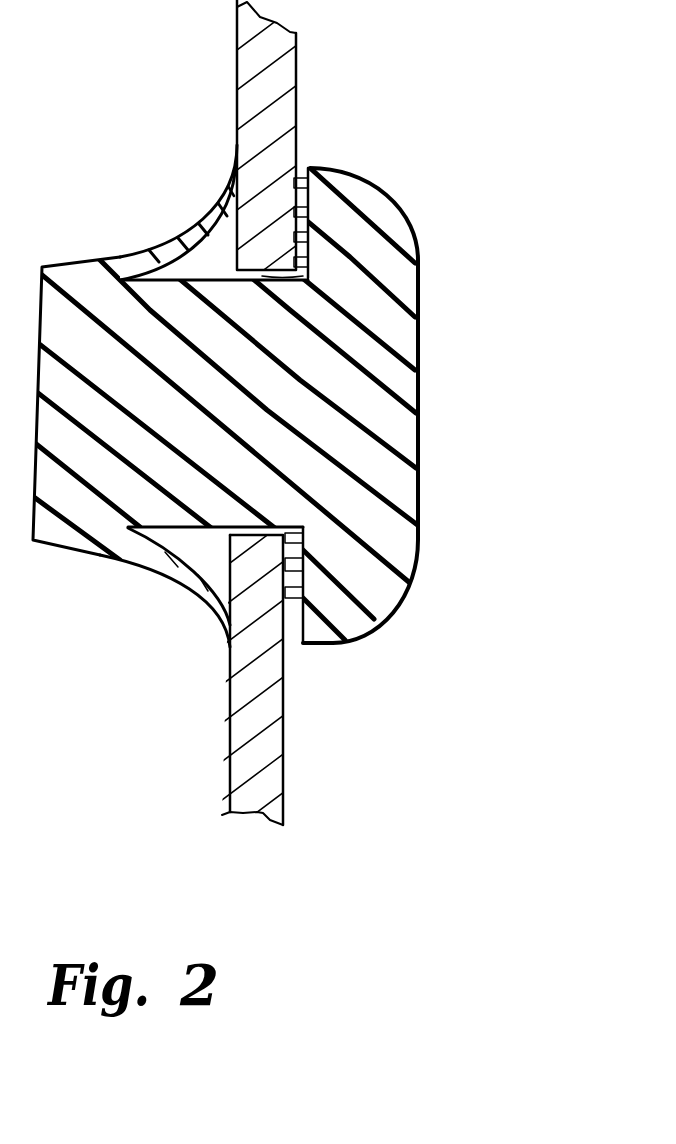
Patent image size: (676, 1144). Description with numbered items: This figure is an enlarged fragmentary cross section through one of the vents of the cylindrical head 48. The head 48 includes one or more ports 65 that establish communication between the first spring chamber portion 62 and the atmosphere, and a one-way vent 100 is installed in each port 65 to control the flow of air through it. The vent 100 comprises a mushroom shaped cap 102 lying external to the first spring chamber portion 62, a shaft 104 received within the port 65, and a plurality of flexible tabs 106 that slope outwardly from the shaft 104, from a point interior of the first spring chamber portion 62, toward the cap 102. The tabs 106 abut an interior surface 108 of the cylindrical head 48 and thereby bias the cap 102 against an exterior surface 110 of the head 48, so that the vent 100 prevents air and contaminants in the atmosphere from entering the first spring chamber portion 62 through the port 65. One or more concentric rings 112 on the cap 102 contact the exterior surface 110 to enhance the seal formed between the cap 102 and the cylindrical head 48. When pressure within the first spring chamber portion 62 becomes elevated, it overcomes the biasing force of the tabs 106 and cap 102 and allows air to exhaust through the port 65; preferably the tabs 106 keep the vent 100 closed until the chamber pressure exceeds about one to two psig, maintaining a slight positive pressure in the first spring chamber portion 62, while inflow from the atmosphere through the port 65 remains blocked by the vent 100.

The cylindrical head 48 is at (290, 159).
The first spring chamber portion 62 is at (268, 159).
The port 65 is at (295, 277).
The one-way vent 100 is at (304, 426).
The mushroom shaped cap 102 is at (400, 333).
The shaft 104 is at (393, 490).
The flexible tabs 106 is at (190, 588).
The interior surface 108 is at (230, 790).
The exterior surface 110 is at (255, 678).
The concentric rings 112 is at (287, 613).